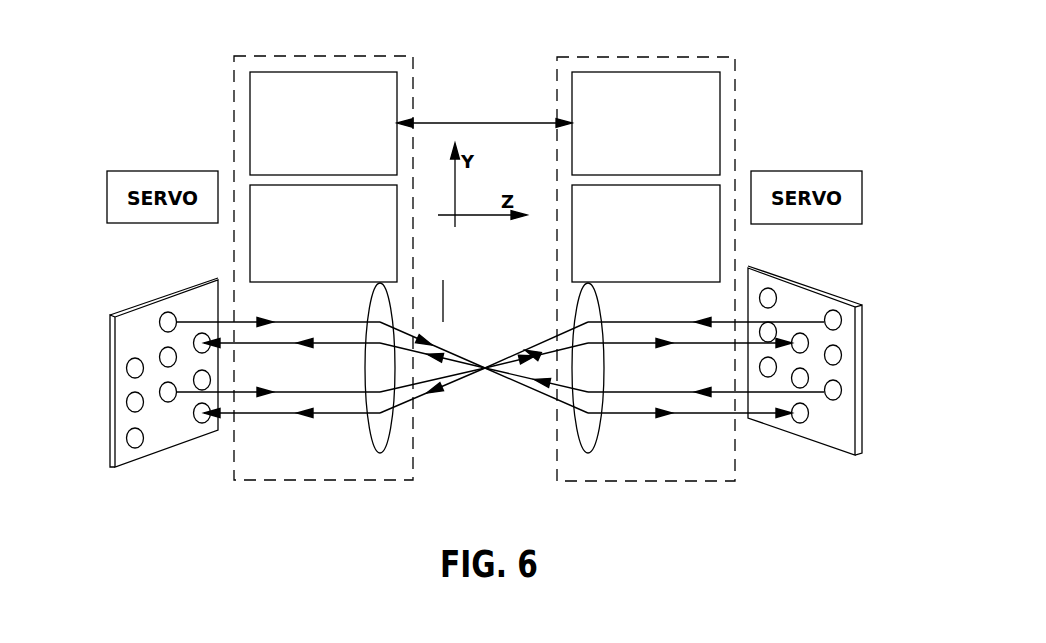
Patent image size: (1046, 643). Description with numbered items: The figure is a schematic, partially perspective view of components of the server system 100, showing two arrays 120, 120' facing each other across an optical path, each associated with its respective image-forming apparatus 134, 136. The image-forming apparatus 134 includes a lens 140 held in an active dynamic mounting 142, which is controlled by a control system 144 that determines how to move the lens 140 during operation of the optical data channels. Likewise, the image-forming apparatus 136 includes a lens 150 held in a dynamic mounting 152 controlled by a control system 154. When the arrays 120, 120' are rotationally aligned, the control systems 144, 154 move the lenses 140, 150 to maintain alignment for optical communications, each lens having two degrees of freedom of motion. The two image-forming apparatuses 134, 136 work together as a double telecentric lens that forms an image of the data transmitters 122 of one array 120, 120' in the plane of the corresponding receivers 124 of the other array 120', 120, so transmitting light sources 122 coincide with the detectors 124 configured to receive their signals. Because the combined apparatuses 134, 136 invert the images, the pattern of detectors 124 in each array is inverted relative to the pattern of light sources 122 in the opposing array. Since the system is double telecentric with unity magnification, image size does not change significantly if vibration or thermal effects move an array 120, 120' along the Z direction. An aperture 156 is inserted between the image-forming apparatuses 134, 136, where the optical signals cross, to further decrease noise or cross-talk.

The system 100 is at (171, 52).
The array 120 is at (143, 363).
The array 120' is at (824, 342).
The data transmitter 122 is at (168, 312).
The receiver 124 is at (126, 368).
The image-forming apparatus 134 is at (340, 471).
The image-forming apparatus 136 is at (663, 471).
The lens 140 is at (382, 445).
The dynamic mounting 142 is at (342, 271).
The control system 144 is at (389, 166).
The lens 150 is at (586, 308).
The dynamic mounting 152 is at (663, 271).
The control system 154 is at (711, 166).
The aperture 156 is at (443, 302).